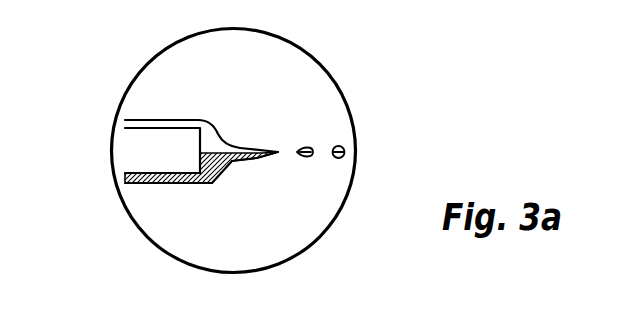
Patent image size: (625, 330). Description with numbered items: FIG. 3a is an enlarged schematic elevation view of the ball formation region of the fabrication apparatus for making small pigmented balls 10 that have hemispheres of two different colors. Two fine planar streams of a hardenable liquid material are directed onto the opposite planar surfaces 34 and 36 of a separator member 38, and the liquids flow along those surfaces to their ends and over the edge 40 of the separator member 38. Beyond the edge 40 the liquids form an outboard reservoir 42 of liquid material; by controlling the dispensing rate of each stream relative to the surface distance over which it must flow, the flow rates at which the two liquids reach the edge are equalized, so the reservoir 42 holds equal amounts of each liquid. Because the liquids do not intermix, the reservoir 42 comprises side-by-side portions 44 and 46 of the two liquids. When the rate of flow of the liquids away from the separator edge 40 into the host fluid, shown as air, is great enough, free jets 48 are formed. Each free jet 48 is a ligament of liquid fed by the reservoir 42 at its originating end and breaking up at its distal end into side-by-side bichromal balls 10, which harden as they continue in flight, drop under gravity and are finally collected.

The pigmented balls 10 is at (308, 147).
The planar surface 34 is at (158, 128).
The planar surface 36 is at (145, 183).
The separator member 38 is at (140, 157).
The edge 40 is at (175, 183).
The outboard reservoir 42 is at (212, 123).
The side-by-side portion 44 is at (218, 145).
The side-by-side portion 46 is at (213, 181).
The free jets 48 is at (257, 158).